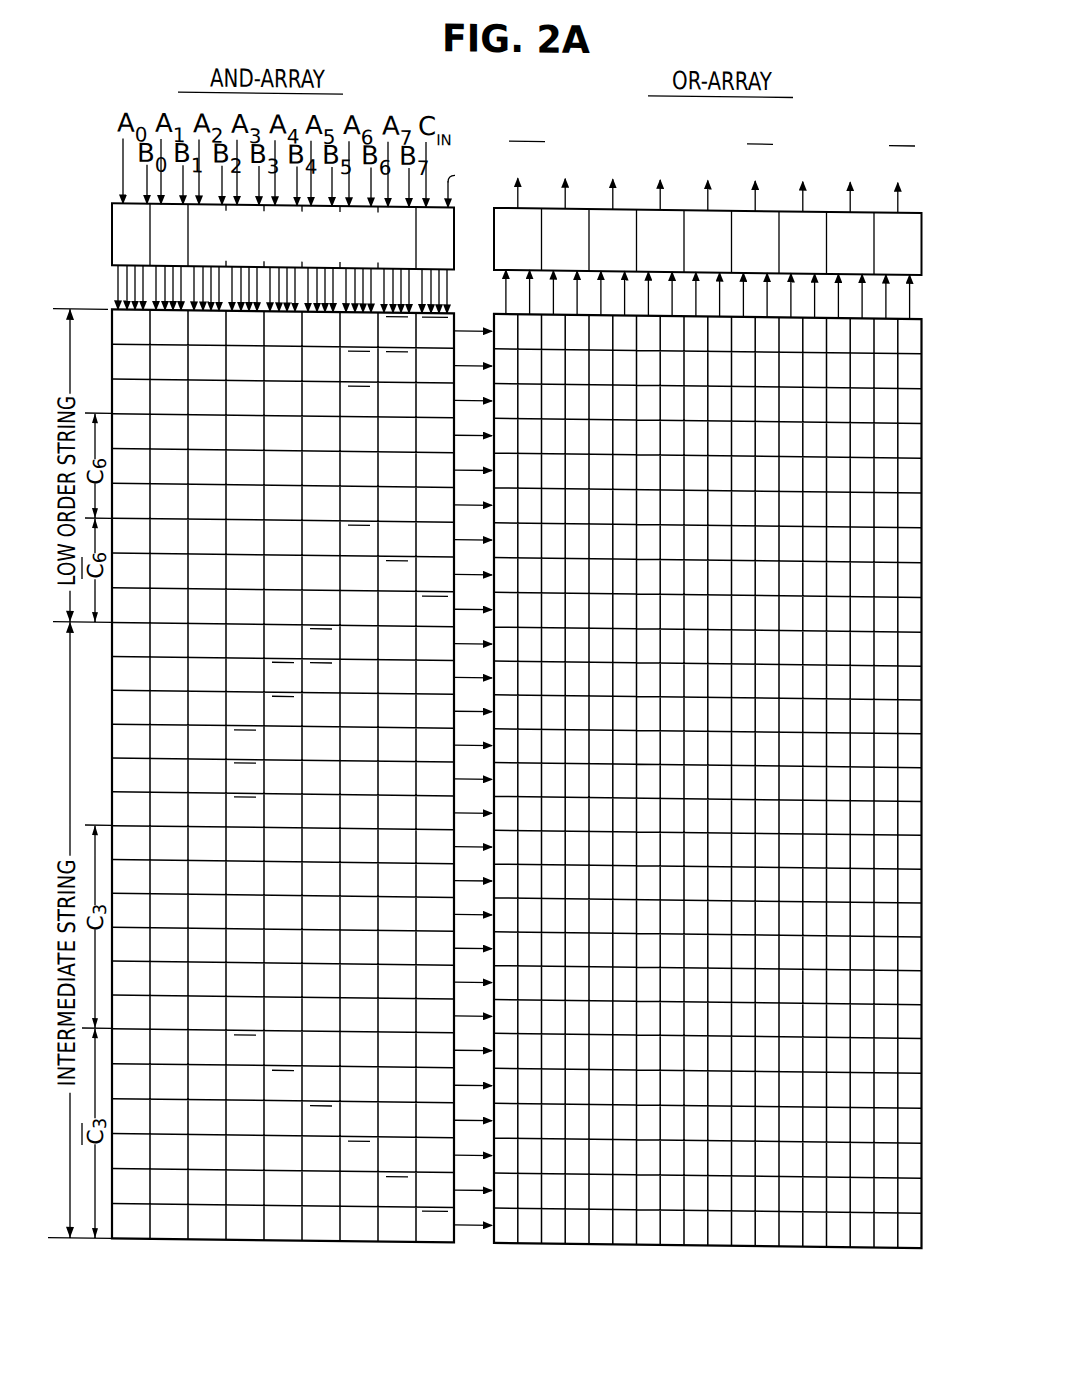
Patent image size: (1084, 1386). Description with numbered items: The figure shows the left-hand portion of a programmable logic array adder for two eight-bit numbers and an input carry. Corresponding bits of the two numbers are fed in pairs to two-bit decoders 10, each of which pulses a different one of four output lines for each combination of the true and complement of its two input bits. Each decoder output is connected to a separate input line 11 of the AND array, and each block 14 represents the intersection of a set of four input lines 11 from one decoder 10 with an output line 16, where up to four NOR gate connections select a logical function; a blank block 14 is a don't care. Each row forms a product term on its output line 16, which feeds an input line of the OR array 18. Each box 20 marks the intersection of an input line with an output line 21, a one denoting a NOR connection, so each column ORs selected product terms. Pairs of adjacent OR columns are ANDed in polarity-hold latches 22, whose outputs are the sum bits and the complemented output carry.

The 2-bit decoder 10 is at (112, 224).
The input line 11 is at (114, 285).
The block 14 is at (120, 327).
The output line 16 is at (468, 323).
The OR array 18 is at (924, 310).
The box 20 is at (881, 1237).
The output line 21 is at (505, 290).
The polarity-hold latch 22 is at (914, 223).